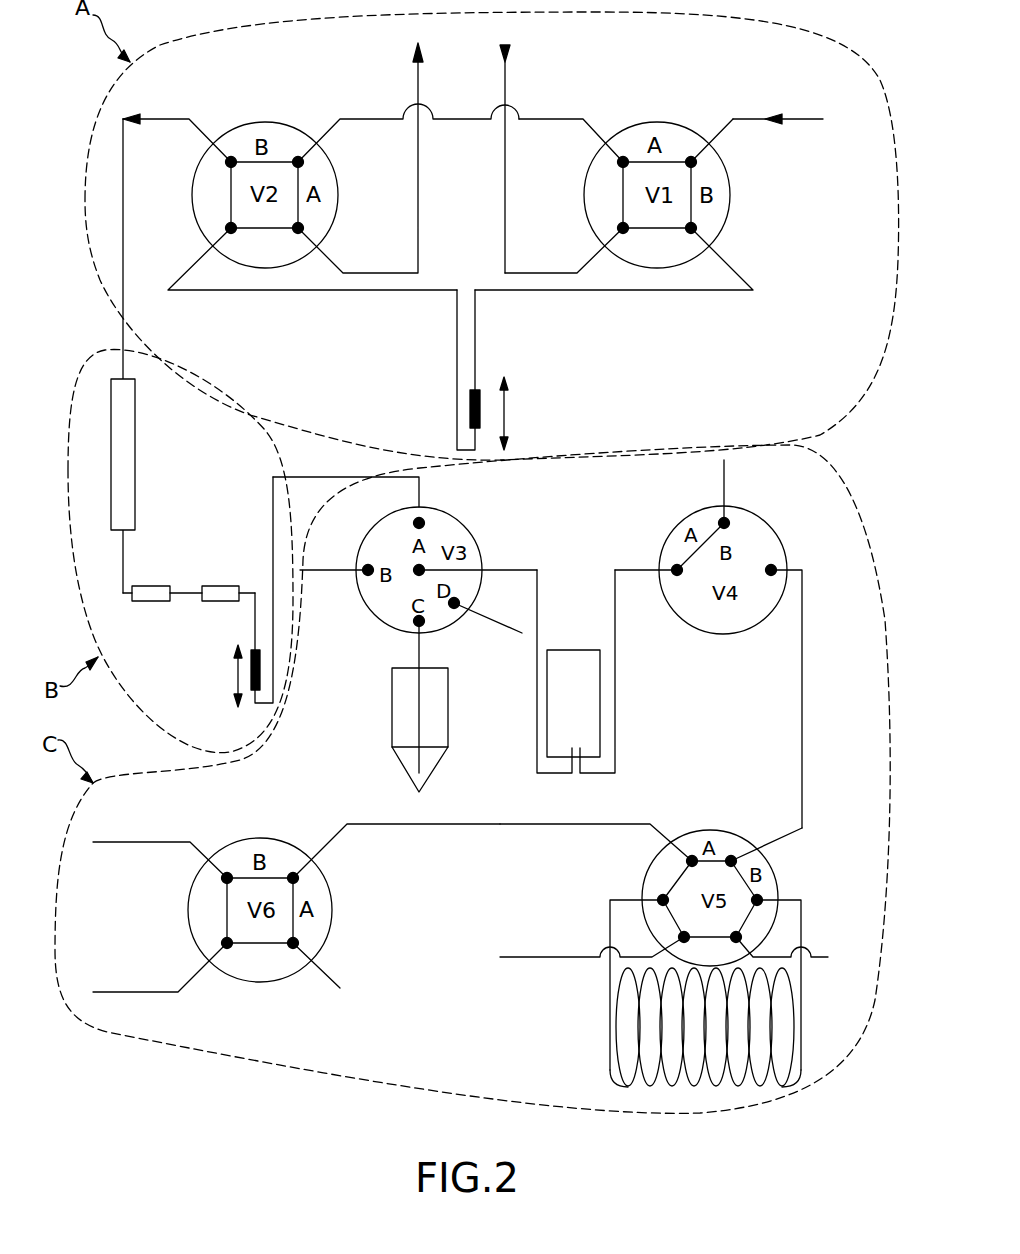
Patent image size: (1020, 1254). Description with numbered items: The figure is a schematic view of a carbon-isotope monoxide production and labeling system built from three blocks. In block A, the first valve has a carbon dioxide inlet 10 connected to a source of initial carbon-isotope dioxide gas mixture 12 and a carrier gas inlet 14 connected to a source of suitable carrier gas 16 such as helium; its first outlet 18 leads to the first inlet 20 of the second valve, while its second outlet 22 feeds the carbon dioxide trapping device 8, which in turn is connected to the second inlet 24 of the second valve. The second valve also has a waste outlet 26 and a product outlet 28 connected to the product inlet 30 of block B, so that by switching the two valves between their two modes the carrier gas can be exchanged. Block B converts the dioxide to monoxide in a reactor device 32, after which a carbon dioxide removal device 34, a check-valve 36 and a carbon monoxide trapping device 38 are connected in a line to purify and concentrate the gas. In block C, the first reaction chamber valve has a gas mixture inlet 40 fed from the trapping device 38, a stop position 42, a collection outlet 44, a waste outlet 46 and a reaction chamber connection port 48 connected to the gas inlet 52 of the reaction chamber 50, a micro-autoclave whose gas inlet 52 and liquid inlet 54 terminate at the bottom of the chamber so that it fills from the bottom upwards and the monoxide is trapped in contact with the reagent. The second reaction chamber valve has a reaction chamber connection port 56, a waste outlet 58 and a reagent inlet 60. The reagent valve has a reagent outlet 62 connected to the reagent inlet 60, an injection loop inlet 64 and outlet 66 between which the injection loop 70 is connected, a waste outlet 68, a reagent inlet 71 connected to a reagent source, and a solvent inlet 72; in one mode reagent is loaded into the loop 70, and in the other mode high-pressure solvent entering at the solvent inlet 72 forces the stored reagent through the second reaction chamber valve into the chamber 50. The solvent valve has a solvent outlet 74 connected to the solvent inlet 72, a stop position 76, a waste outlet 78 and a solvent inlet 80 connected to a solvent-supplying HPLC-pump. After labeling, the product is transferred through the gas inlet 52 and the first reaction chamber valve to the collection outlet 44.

The carbon dioxide trapping device 8 is at (516, 370).
The carbon dioxide inlet 10 is at (725, 140).
The source of initial carbon-isotope dioxide gas mixture 12 is at (787, 100).
The carrier gas inlet 14 is at (564, 250).
The source of suitable carrier gas 16 is at (524, 156).
The first outlet 18 is at (572, 134).
The first inlet 20 is at (408, 130).
The second outlet 22 is at (614, 259).
The second inlet 24 is at (312, 259).
The waste outlet 26 is at (360, 158).
The product outlet 28 is at (177, 131).
The product inlet 30 is at (146, 356).
The reactor device 32 is at (189, 454).
The carbon dioxide removal device 34 is at (162, 609).
The check-valve 36 is at (228, 609).
The carbon monoxide trapping device 38 is at (214, 599).
The gas mixture inlet 40 is at (368, 494).
The stop position 42 is at (334, 577).
The collection outlet 44 is at (416, 706).
The waste outlet 46 is at (484, 624).
The reaction chamber connection port 48 is at (478, 557).
The reaction chamber 50 is at (573, 703).
The gas inlet 52 is at (554, 689).
The liquid inlet 54 is at (597, 689).
The reaction chamber connection port 56 is at (646, 554).
The waste outlet 58 is at (759, 489).
The reagent inlet 60 is at (797, 683).
The reagent outlet 62 is at (766, 834).
The injection loop inlet 64 is at (636, 965).
The injection loop outlet 66 is at (790, 967).
The waste outlet 68 is at (800, 941).
The injection loop 70 is at (705, 1041).
The reagent inlet 71 is at (592, 940).
The solvent inlet 72 is at (599, 834).
The solvent outlet 74 is at (396, 847).
The stop position 76 is at (340, 980).
The waste outlet 78 is at (160, 983).
The solvent inlet 80 is at (160, 833).